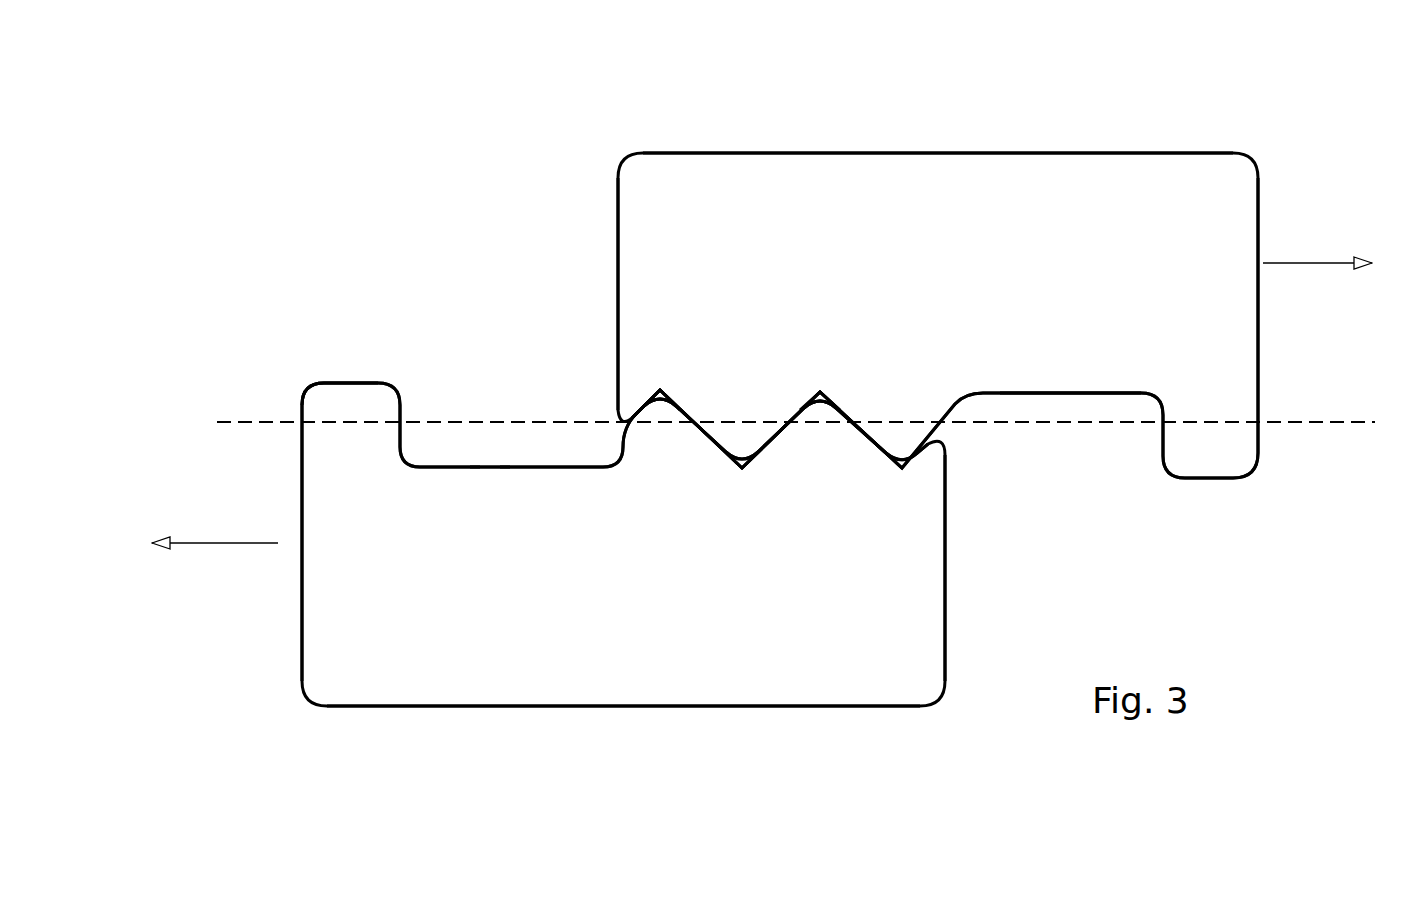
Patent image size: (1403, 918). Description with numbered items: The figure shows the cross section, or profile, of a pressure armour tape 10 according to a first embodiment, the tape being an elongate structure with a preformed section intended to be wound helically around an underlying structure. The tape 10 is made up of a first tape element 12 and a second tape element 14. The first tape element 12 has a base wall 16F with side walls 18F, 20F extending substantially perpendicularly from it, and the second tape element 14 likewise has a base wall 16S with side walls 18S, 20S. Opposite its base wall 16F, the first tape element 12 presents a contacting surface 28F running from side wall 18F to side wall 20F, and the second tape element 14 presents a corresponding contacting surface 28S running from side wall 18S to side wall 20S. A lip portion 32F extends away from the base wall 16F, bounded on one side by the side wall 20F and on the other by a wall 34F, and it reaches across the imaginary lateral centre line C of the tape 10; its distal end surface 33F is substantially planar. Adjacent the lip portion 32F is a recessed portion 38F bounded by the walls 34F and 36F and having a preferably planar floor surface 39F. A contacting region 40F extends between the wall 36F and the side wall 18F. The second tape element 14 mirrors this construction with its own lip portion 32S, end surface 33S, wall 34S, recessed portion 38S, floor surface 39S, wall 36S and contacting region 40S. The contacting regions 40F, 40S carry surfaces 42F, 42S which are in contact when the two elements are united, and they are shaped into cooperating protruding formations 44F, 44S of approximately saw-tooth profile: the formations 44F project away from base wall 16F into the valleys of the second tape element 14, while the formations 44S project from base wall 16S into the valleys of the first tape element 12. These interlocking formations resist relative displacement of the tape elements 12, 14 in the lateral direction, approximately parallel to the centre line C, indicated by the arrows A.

The tape 10 is at (443, 177).
The first tape element 12 is at (1045, 200).
The second tape element 14 is at (810, 677).
The base wall 16F is at (801, 152).
The base wall 16S is at (472, 706).
The side wall 18F is at (617, 218).
The side wall 18S is at (947, 590).
The side wall 20F is at (1258, 330).
The side wall 20S is at (302, 590).
The contacting surface 28F is at (1055, 395).
The contacting surface 28S is at (448, 467).
The lip portion 32F is at (1207, 457).
The lip portion 32S is at (320, 410).
The end surface 33F is at (1233, 484).
The end surface 33S is at (337, 380).
The wall 34F is at (1160, 438).
The wall 34S is at (405, 392).
The wall 36F is at (958, 403).
The wall 36S is at (663, 413).
The recessed portion 38F is at (1090, 395).
The recessed portion 38S is at (520, 466).
The floor surface 39F is at (1030, 398).
The floor surface 39S is at (490, 467).
The contacting region 40F is at (742, 362).
The contacting region 40S is at (768, 513).
The surface 42F is at (863, 425).
The surface 42S is at (790, 436).
The protruding formations 44F is at (735, 432).
The protruding formations 44S is at (807, 445).
The arrows A is at (762, 380).
The lateral centre line C is at (1290, 420).